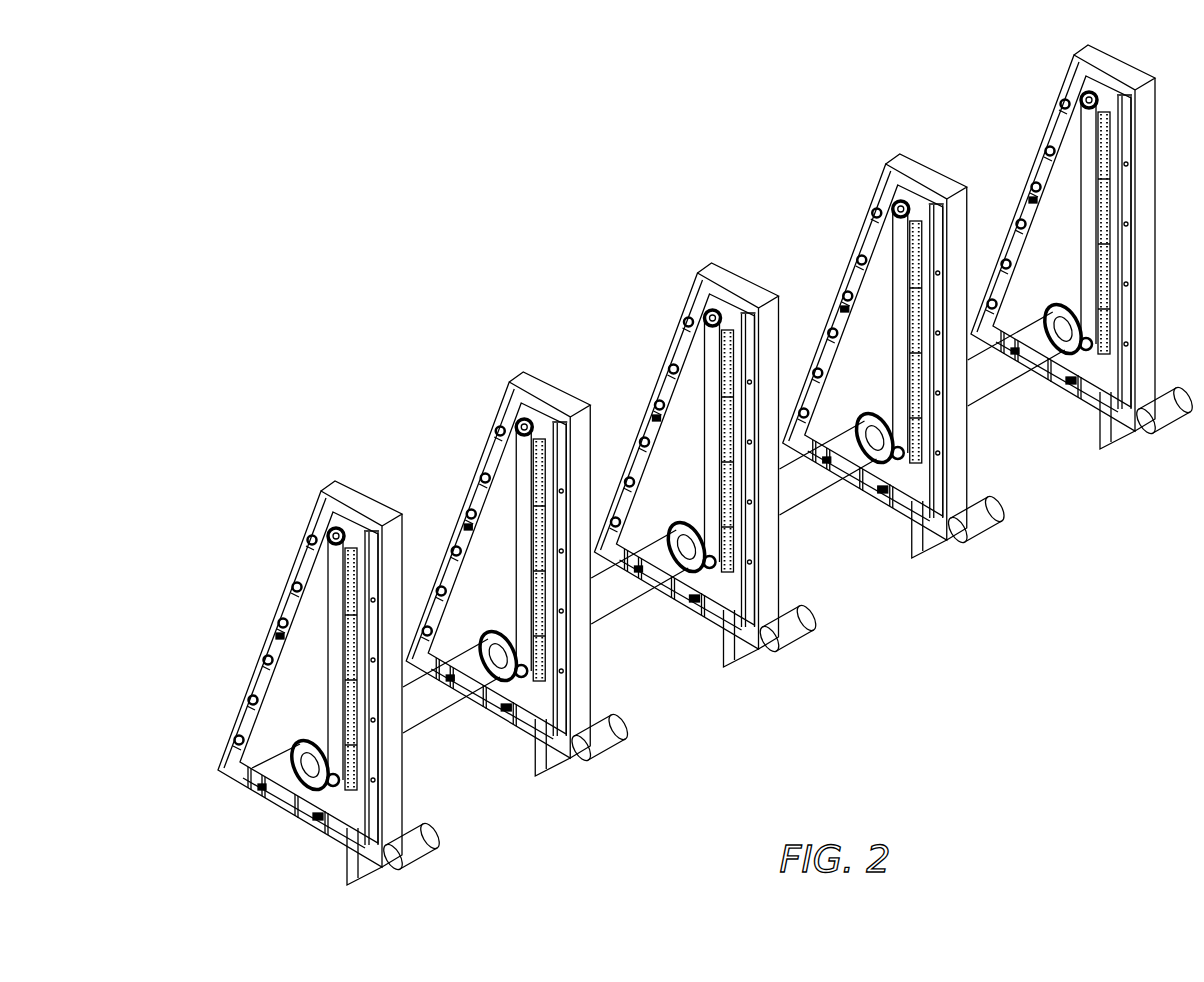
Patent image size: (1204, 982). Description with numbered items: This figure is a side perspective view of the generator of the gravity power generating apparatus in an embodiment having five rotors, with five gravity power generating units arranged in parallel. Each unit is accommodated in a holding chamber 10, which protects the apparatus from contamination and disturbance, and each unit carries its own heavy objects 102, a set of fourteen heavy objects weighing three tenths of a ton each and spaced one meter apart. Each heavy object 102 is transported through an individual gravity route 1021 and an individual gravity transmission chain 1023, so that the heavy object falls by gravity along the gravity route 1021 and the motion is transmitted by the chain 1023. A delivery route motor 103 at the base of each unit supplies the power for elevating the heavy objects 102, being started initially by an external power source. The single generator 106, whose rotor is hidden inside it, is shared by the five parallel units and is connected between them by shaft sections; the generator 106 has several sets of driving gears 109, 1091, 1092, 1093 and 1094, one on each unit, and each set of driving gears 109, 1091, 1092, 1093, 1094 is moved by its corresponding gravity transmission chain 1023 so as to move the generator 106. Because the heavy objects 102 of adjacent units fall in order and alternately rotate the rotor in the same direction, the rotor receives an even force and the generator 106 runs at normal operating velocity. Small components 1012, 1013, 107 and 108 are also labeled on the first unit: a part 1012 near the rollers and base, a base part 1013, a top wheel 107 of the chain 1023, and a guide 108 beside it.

The holding chamber 10 is at (322, 506).
The heavy object 102 is at (282, 620).
The roller bracket 1012 is at (280, 635).
The base bracket 1013 is at (318, 817).
The gravity route 1021 is at (343, 570).
The gravity transmission chain 1023 is at (325, 593).
The delivery route motor 103 is at (417, 849).
The generator 106 is at (329, 733).
The top roller 107 is at (353, 520).
The guide rail 108 is at (377, 607).
The driving gear 109 is at (292, 762).
The driving gear 1091 is at (488, 629).
The driving gear 1092 is at (676, 520).
The driving gear 1093 is at (864, 411).
The driving gear 1094 is at (1053, 302).